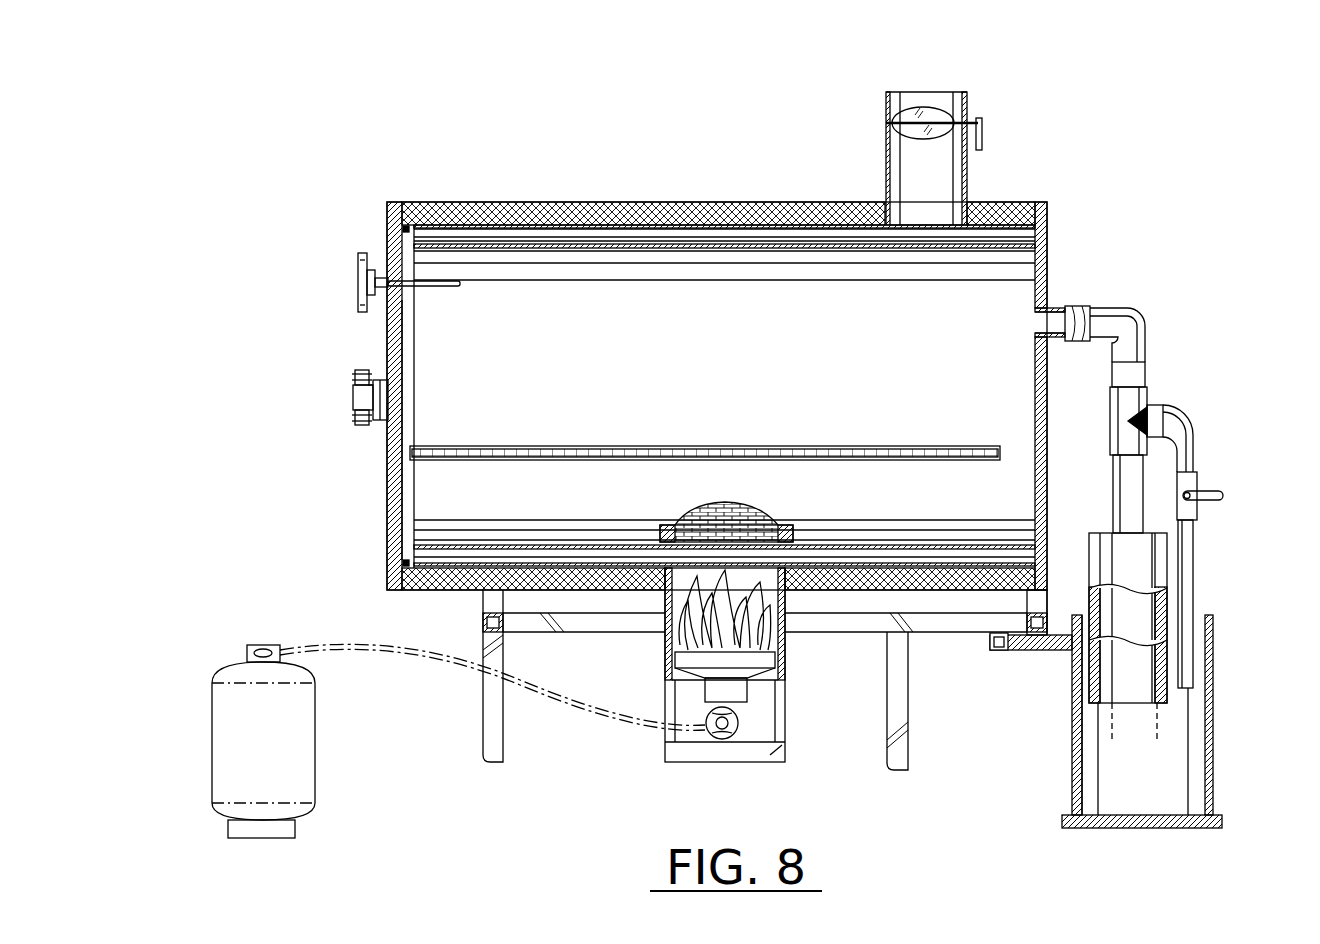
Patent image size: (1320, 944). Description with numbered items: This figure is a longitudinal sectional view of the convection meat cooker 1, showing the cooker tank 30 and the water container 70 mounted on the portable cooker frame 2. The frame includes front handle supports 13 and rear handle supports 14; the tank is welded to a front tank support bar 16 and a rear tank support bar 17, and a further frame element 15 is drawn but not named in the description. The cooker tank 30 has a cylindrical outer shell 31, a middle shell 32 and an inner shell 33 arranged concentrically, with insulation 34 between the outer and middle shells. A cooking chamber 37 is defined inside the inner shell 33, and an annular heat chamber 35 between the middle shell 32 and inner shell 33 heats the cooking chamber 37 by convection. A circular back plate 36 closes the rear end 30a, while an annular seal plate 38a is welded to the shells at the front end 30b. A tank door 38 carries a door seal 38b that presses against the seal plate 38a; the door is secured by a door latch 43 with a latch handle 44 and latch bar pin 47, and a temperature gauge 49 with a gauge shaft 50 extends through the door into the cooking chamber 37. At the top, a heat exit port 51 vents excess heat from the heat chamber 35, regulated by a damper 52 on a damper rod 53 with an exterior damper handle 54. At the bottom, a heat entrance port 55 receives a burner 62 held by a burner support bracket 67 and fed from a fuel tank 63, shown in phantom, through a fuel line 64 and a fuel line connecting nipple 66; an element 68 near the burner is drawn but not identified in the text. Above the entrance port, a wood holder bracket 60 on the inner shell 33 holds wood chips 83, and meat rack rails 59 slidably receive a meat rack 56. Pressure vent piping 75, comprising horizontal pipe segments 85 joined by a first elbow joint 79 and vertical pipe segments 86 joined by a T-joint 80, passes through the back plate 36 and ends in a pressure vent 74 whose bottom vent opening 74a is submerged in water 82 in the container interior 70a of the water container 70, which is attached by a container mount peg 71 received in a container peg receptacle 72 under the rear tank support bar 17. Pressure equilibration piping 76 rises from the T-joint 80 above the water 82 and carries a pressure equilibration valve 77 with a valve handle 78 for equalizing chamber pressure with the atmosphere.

The convection meat cooker 1 is at (676, 118).
The cooker frame 2 is at (462, 712).
The front handle supports 13 is at (898, 752).
The rear handle supports 14 is at (500, 762).
The frame rail 15 is at (822, 628).
The front tank support bar 16 is at (503, 630).
The rear tank support bar 17 is at (1022, 622).
The cooker tank 30 is at (737, 185).
The rear end 30a is at (1010, 203).
The front end 30b is at (405, 590).
The outer shell 31 is at (840, 203).
The middle shell 32 is at (625, 200).
The inner shell 33 is at (680, 245).
The insulation 34 is at (540, 198).
The annular heat chamber 35 is at (877, 250).
The back plate 36 is at (1048, 283).
The cooking chamber 37 is at (455, 345).
The tank door 38 is at (370, 237).
The seal plate 38a is at (412, 410).
The door seal 38b is at (405, 222).
The door latch 43 is at (330, 398).
The latch handle 44 is at (352, 410).
The latch bar pin 47 is at (352, 375).
The temperature gauge 49 is at (358, 285).
The gauge shaft 50 is at (460, 287).
The heat exit port 51 is at (968, 110).
The damper 52 is at (924, 138).
The damper rod 53 is at (937, 122).
The damper handle 54 is at (980, 148).
The heat entrance port 55 is at (787, 650).
The meat rack 56 is at (627, 430).
The meat rack rail 59 is at (820, 448).
The wood holder bracket 60 is at (790, 525).
The burner 62 is at (668, 662).
The fuel tank 63 is at (310, 768).
The fuel line 64 is at (660, 735).
The fuel line connecting nipple 66 is at (760, 738).
The burner support bracket 67 is at (715, 752).
The flame 68 is at (700, 640).
The water container 70 is at (1215, 722).
The container interior 70a is at (1195, 772).
The container mount peg 71 is at (1075, 652).
The container peg receptacle 72 is at (1030, 650).
The pressure vent 74 is at (1105, 555).
The bottom vent opening 74a is at (1105, 715).
The pressure vent piping 75 is at (1082, 297).
The pressure equilibration piping 76 is at (1190, 600).
The pressure equilibration valve 77 is at (1195, 480).
The valve handle 78 is at (1232, 500).
The first elbow joint 79 is at (1137, 352).
The T-joint 80 is at (1140, 395).
The water 82 is at (1213, 800).
The wood chips 83 is at (690, 512).
The horizontal pipe segments 85 is at (1078, 341).
The vertical pipe segments 86 is at (1140, 375).